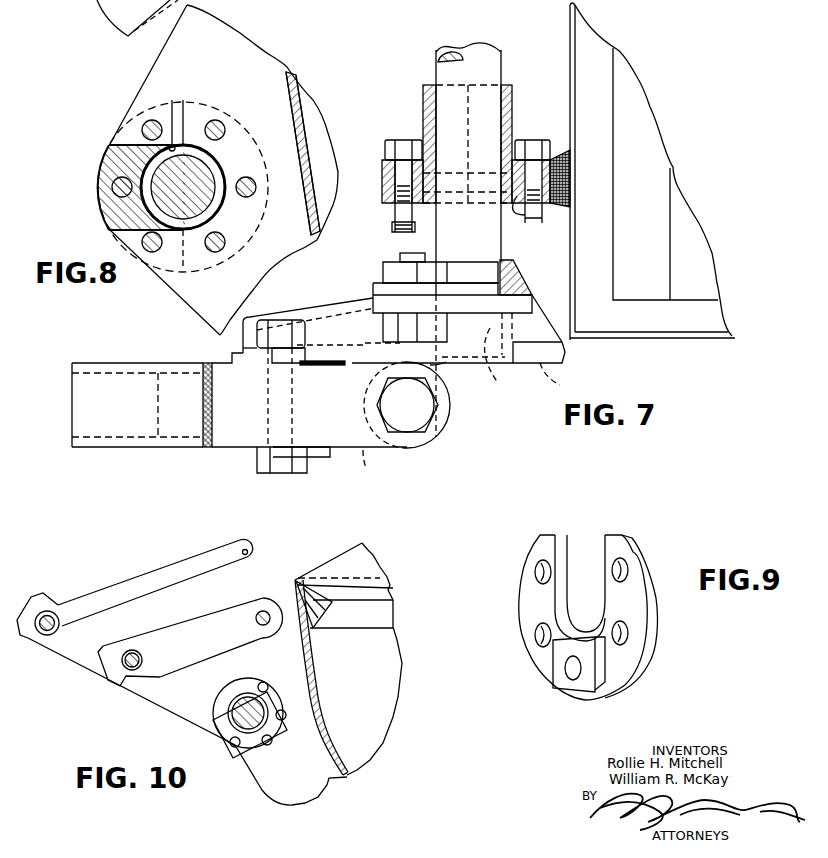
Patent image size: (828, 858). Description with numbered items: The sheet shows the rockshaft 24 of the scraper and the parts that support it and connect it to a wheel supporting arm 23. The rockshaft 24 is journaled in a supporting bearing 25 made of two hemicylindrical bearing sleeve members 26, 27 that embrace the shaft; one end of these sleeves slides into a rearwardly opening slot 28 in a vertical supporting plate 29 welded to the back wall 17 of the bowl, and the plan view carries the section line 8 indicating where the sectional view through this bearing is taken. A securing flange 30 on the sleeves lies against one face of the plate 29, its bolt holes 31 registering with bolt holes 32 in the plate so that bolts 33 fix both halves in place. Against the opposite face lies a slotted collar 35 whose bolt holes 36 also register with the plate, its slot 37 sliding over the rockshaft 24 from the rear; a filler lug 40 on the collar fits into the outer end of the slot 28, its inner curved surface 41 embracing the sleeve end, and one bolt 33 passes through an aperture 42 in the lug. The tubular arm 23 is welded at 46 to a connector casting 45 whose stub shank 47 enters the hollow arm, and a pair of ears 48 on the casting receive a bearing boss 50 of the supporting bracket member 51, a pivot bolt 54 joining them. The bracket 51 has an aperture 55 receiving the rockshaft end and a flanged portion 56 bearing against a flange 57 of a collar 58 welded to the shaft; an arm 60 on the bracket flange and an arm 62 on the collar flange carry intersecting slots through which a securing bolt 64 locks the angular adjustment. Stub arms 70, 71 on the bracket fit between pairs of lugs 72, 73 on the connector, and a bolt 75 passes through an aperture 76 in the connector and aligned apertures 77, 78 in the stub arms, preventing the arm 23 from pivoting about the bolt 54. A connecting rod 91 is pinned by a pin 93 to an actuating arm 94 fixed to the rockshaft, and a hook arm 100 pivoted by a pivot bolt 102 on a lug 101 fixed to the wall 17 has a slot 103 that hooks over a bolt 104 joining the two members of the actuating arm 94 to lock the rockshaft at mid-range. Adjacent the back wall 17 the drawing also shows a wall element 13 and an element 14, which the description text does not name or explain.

In FIG. 7, the section line 8— 8 is at (353, 192).
In FIG. 7, the plate 13 is at (610, 245).
In FIG. 10, the plate 13 is at (317, 580).
In FIG. 7, the flange 14 is at (666, 322).
In FIG. 7, the back wall 17 is at (694, 232).
In FIG. 10, the back wall 17 is at (320, 688).
In FIG. 7, the wheel supporting arm 23 is at (105, 428).
In FIG. 8, the rockshaft 24 is at (205, 200).
In FIG. 7, the rockshaft 24 is at (490, 240).
In FIG. 10, the rockshaft 24 is at (245, 712).
In FIG. 8, the supporting bearing 25 is at (105, 140).
In FIG. 7, the supporting bearing 25 is at (420, 110).
In FIG. 10, the supporting bearing 25 is at (225, 748).
In FIG. 8, the hemicylindrical bearing sleeve member 26 is at (166, 236).
In FIG. 7, the hemicylindrical bearing sleeve member 26 is at (429, 86).
In FIG. 8, the hemicylindrical bearing sleeve member 27 is at (216, 172).
In FIG. 7, the hemicylindrical bearing sleeve member 27 is at (509, 88).
In FIG. 8, the slot 28 is at (175, 145).
In FIG. 7, the slot 28 is at (528, 205).
In FIG. 8, the supporting plate 29 is at (168, 70).
In FIG. 7, the supporting plate 29 is at (560, 175).
In FIG. 10, the supporting plate 29 is at (280, 773).
In FIG. 8, the securing flange 30 is at (201, 100).
In FIG. 7, the securing flange 30 is at (387, 162).
In FIG. 7, the bolt hole 31 is at (404, 160).
In FIG. 8, the bolt hole 32 is at (250, 183).
In FIG. 7, the bolt hole 32 is at (565, 195).
In FIG. 8, the bolt 33 is at (218, 126).
In FIG. 7, the bolt 33 is at (531, 150).
In FIG. 10, the bolt 33 is at (268, 688).
In FIG. 7, the slotted collar 35 is at (428, 210).
In FIG. 9, the slotted collar 35 is at (630, 590).
In FIG. 10, the slotted collar 35 is at (250, 689).
In FIG. 9, the bolt hole 36 is at (540, 568).
In FIG. 9, the slot 37 is at (568, 550).
In FIG. 10, the slot 37 is at (279, 727).
In FIG. 8, the filler lug 40 is at (116, 158).
In FIG. 7, the filler lug 40 is at (388, 186).
In FIG. 9, the filler lug 40 is at (560, 656).
In FIG. 9, the inner curved surface 41 is at (578, 640).
In FIG. 9, the aperture 42 is at (573, 682).
In FIG. 7, the connector casting 45 is at (222, 450).
In FIG. 7, the weld 46 is at (207, 450).
In FIG. 7, the stub shank 47 is at (157, 400).
In FIG. 7, the ear 48 is at (430, 435).
In FIG. 7, the bearing boss 50 is at (365, 456).
In FIG. 7, the supporting bracket member 51 is at (460, 377).
In FIG. 7, the pivot bolt 54 is at (412, 420).
In FIG. 7, the aperture 55 is at (498, 372).
In FIG. 7, the flanged portion 56 is at (528, 303).
In FIG. 7, the flange 57 is at (528, 292).
In FIG. 7, the collar 58 is at (513, 272).
In FIG. 7, the arm 60 is at (380, 300).
In FIG. 7, the arm 62 is at (388, 275).
In FIG. 7, the securing bolt 64 is at (448, 328).
In FIG. 7, the stub arm 70 is at (246, 336).
In FIG. 7, the stub arm 71 is at (566, 355).
In FIG. 7, the lug 72 is at (290, 357).
In FIG. 7, the lug 73 is at (300, 450).
In FIG. 7, the bolt 75 is at (286, 474).
In FIG. 7, the aperture 76 is at (268, 407).
In FIG. 7, the aperture 77 is at (312, 333).
In FIG. 7, the aperture 78 is at (548, 370).
In FIG. 10, the connecting rod 91 is at (134, 590).
In FIG. 10, the pin 93 is at (46, 637).
In FIG. 10, the actuating arm 94 is at (45, 598).
In FIG. 10, the hook arm 100 is at (186, 632).
In FIG. 10, the lug 101 is at (272, 606).
In FIG. 10, the pivot bolt 102 is at (262, 612).
In FIG. 10, the slot 103 is at (125, 688).
In FIG. 10, the bolt 104 is at (136, 652).